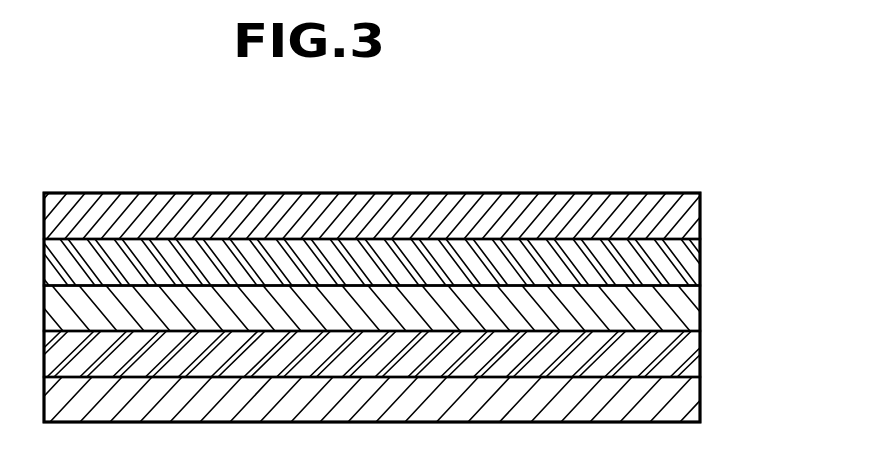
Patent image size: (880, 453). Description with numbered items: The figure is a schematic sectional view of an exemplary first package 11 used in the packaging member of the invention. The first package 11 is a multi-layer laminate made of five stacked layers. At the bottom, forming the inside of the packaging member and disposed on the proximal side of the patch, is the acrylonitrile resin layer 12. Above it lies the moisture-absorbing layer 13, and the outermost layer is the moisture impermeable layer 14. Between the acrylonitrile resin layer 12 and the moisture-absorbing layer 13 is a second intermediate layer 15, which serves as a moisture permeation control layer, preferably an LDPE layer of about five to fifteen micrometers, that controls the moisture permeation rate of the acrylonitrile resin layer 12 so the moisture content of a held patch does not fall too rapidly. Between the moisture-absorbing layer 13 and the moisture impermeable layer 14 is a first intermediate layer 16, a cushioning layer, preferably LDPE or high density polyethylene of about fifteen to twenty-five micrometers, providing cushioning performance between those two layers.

The first package 11 is at (572, 192).
The acrylonitrile resin layer 12 is at (688, 402).
The moisture-absorbing layer 13 is at (685, 303).
The moisture impermeable layer 14 is at (685, 208).
The second intermediate layer 15 is at (688, 348).
The first intermediate layer 16 is at (685, 260).